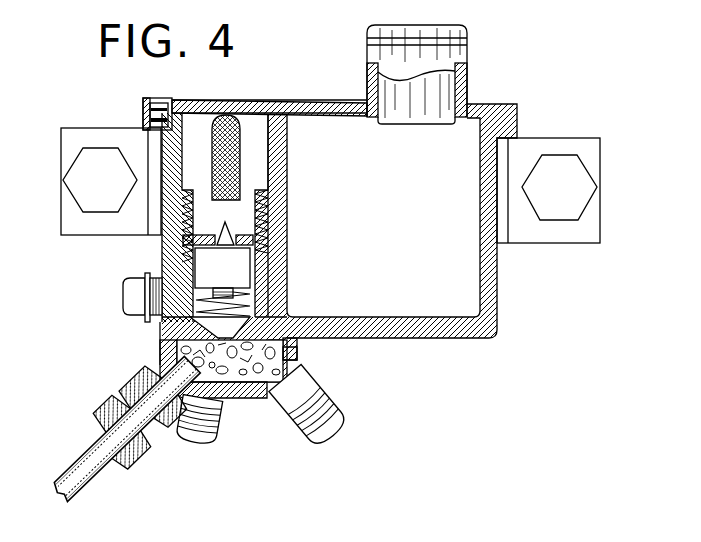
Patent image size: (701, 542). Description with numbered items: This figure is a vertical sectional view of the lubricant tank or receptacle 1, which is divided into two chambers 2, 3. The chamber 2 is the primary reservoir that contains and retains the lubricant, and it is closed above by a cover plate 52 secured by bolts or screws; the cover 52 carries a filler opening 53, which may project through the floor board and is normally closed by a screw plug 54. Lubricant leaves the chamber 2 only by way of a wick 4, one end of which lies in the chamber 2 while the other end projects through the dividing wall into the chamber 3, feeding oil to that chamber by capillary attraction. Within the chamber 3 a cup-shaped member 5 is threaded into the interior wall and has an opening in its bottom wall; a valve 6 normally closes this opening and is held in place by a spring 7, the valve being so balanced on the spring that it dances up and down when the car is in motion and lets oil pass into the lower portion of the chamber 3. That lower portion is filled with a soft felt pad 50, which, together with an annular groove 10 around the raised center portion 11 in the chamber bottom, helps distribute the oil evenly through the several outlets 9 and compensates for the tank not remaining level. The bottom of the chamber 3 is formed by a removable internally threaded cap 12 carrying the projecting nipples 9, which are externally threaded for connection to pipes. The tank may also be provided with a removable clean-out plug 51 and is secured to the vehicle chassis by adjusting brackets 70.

The tank or receptacle 1 is at (493, 110).
The primary reservoir chamber 2 is at (418, 287).
The chamber 3 is at (257, 155).
The wick 4 is at (257, 102).
The cup-shaped member 5 is at (257, 190).
The valve 6 is at (226, 262).
The spring 7 is at (221, 0).
The outlets or projecting nipples 9 is at (326, 410).
The annular groove 10 is at (292, 377).
The raised center portion 11 is at (239, 380).
The removable internally threaded cap 12 is at (175, 372).
The soft felt pad 50 is at (283, 357).
The removable clean-out plug 51 is at (130, 292).
The cover plate 52 is at (329, 101).
The filler opening 53 is at (413, 85).
The screw plug 54 is at (445, 33).
The adjusting brackets 70 is at (553, 145).